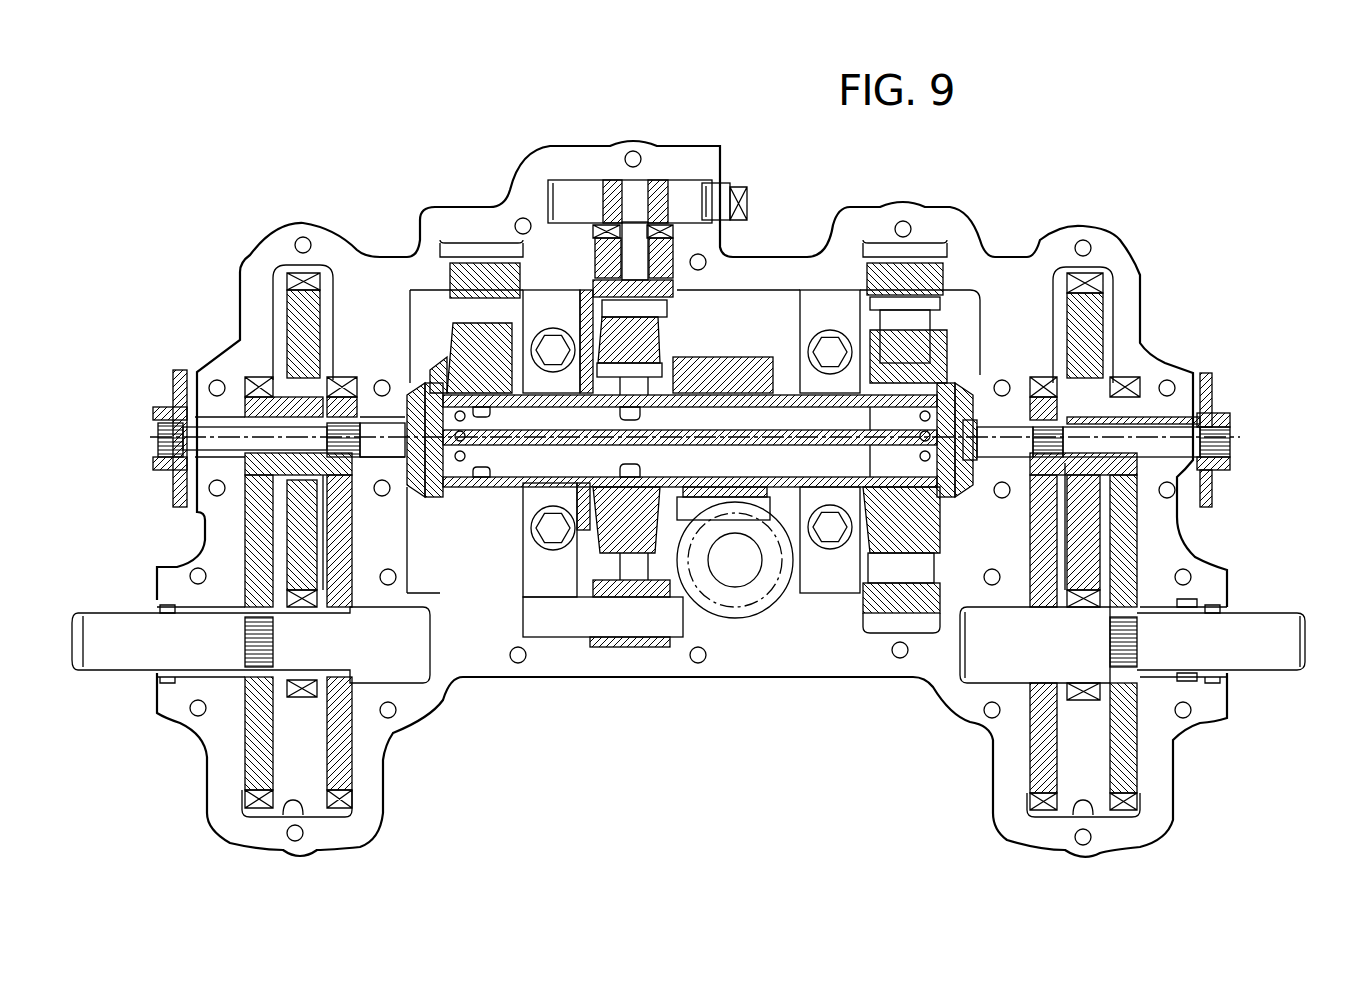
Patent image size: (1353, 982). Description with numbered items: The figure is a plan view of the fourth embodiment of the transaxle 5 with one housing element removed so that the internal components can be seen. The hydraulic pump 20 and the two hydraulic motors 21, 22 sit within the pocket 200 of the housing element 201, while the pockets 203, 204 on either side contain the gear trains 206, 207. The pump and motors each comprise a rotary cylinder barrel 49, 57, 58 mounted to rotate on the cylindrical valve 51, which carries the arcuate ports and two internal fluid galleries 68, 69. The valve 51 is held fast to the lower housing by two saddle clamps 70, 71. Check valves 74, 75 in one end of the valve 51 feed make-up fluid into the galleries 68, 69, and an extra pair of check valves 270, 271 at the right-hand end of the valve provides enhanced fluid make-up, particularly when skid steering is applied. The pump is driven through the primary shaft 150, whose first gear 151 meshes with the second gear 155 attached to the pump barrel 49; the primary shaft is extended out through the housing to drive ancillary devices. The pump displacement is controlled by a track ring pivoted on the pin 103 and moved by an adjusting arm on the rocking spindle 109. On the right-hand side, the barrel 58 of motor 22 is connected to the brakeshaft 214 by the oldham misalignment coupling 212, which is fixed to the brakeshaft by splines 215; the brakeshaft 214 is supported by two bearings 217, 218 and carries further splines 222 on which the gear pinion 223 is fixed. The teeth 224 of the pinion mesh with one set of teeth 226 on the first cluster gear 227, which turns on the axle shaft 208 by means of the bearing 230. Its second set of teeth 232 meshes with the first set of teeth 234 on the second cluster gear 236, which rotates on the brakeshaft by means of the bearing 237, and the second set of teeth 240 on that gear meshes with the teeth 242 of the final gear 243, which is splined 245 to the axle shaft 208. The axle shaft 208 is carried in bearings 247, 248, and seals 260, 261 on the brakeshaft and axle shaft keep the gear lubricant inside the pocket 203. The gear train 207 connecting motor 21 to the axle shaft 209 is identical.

The transaxle 5 is at (438, 151).
The housing element 201 is at (537, 165).
The rocking spindle 109 is at (683, 198).
The pocket 200 is at (727, 297).
The gear train 207 is at (213, 327).
The cylindrical valve 51 is at (463, 323).
The rotary cylinder barrel 57 is at (480, 370).
The saddle clamp 71 is at (570, 383).
The fluid gallery 68 is at (677, 420).
The second gear 155 is at (727, 372).
The saddle clamp 70 is at (795, 363).
The check valve 74 is at (478, 413).
The check valve 75 is at (483, 457).
The check valve 270 is at (910, 410).
The check valve 271 is at (910, 453).
The rotary cylinder barrel 49 is at (600, 560).
The fluid gallery 69 is at (663, 462).
The pin 103 is at (600, 633).
The primary shaft 150 is at (758, 578).
The first gear 151 is at (732, 607).
The rotary cylinder barrel 58 is at (860, 547).
The misalignment coupling 212 is at (945, 500).
The bearing 217 is at (948, 475).
The splines 215 is at (1000, 423).
The brakeshaft 214 is at (1043, 403).
The teeth 224 is at (1062, 423).
The splines 222 is at (1063, 420).
The first set of teeth 234 is at (1078, 423).
The gear pinion 223 is at (1110, 423).
The gear train 206 is at (1172, 312).
The second set of teeth 240 is at (1148, 410).
The bearing 218 is at (1213, 373).
The seal 260 is at (1217, 413).
The bearing 237 is at (1082, 495).
The second cluster gear 236 is at (1147, 493).
The seal 261 is at (1230, 597).
The bearing 230 is at (1053, 620).
The splines 245 is at (1137, 660).
The axle shaft 208 is at (1295, 654).
The axle shaft 209 is at (150, 654).
The bearing 248 is at (1190, 690).
The first cluster gear 227 is at (1040, 737).
The final gear 243 is at (1123, 753).
The second set of teeth 232 is at (1180, 730).
The teeth 226 is at (1047, 807).
The teeth 242 is at (1147, 810).
The pocket 203 is at (1090, 810).
The bearing 247 is at (987, 700).
The pocket 204 is at (303, 807).
The hydraulic motor 21 is at (499, 700).
The hydraulic pump 20 is at (625, 697).
The hydraulic motor 22 is at (872, 692).